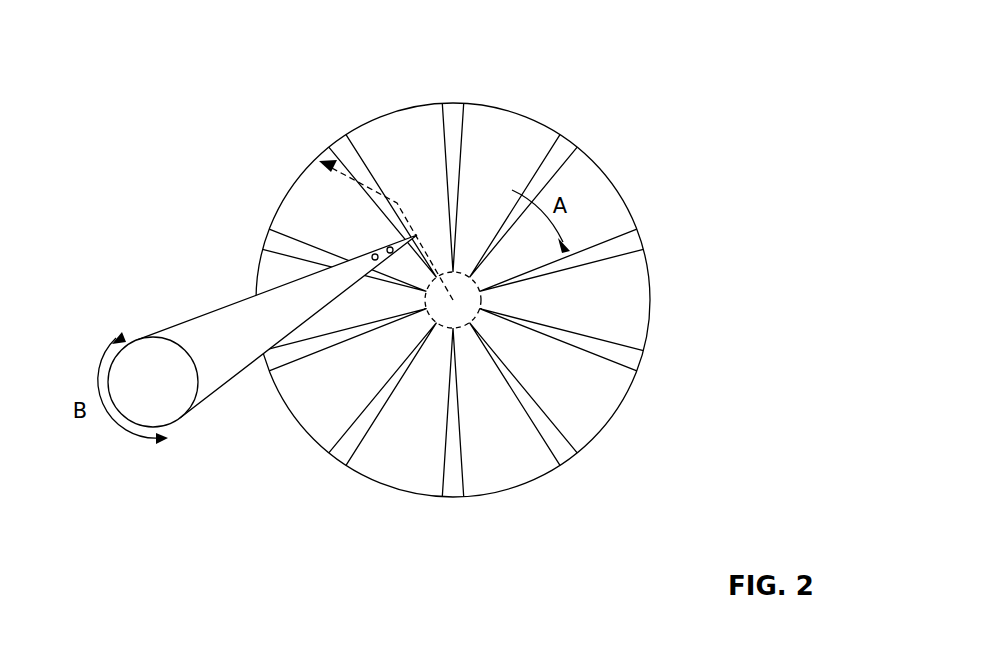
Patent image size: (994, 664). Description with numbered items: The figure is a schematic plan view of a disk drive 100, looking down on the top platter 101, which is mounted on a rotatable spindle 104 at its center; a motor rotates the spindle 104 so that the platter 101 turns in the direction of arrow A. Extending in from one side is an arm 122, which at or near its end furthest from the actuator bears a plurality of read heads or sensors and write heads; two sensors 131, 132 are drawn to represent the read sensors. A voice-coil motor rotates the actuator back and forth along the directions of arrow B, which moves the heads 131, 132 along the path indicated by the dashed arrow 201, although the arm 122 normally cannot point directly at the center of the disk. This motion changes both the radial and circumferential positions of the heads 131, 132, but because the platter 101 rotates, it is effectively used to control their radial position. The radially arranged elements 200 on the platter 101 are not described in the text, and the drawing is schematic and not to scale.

The disk drive 100 is at (150, 48).
The platter 101 is at (298, 186).
The spindle 104 is at (462, 293).
The arm 122 is at (212, 310).
The sensor 131 is at (390, 253).
The sensor 132 is at (365, 257).
The blade 200 is at (451, 119).
The dashed arrow 201 is at (395, 203).